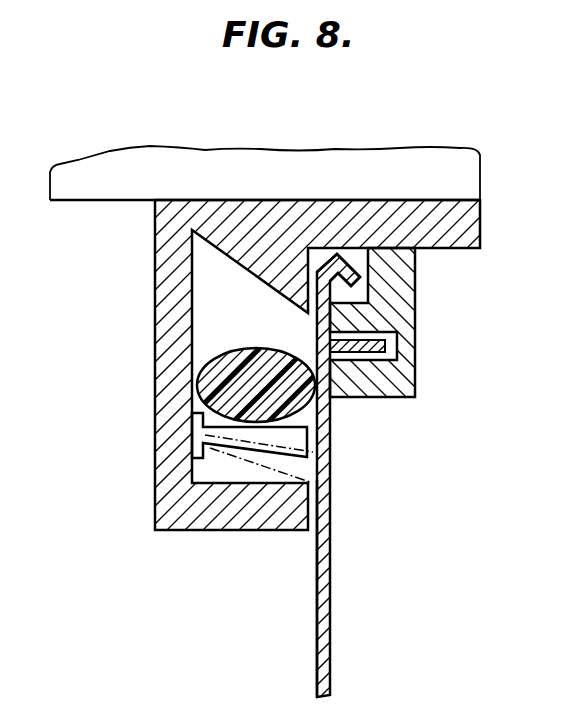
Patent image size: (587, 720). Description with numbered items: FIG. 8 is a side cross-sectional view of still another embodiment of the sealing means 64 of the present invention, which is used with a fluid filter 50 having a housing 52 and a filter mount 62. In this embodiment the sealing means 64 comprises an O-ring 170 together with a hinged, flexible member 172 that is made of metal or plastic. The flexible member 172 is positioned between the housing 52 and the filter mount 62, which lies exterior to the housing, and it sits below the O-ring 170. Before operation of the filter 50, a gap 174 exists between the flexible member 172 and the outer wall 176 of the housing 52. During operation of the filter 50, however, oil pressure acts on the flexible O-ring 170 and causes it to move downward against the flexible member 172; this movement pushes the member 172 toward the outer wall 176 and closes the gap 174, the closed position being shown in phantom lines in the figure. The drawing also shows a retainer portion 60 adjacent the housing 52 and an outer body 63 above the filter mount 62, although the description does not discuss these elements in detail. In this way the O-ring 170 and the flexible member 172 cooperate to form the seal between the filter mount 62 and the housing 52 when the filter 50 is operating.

The fluid filter 50 is at (495, 511).
The housing 52 is at (318, 650).
The retainer member 60 is at (450, 347).
The filter mount 62 is at (173, 220).
The outer body panel 63 is at (360, 160).
The sealing means 64 is at (136, 414).
The O-ring 170 is at (228, 362).
The hinged, flexible member 172 is at (193, 440).
The gap 174 is at (316, 418).
The outer wall 176 is at (318, 587).